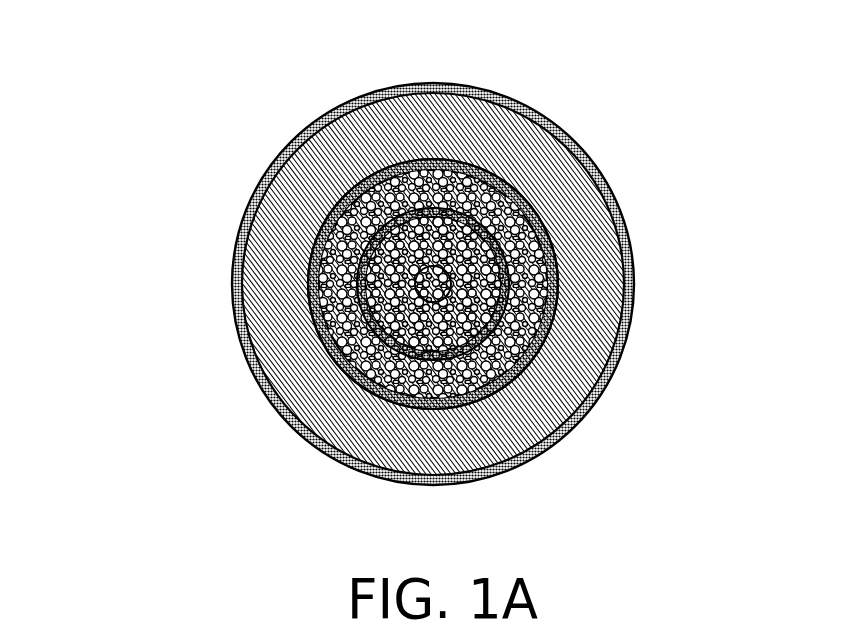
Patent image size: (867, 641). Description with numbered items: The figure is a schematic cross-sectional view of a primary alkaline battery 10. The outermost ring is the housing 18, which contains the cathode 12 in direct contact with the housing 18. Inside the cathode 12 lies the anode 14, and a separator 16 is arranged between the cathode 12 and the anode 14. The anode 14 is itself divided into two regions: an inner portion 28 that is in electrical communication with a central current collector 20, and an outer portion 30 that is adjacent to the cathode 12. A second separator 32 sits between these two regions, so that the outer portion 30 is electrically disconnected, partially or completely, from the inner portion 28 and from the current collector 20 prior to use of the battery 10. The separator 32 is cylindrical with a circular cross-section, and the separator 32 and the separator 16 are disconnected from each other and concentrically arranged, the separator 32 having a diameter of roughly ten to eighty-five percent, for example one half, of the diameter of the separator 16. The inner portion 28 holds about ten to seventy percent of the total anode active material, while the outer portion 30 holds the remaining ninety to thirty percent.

The primary alkaline battery 10 is at (258, 86).
The cathode 12 is at (543, 178).
The anode 14 is at (148, 244).
The separator 16 is at (557, 307).
The housing 18 is at (633, 239).
The current collector 20 is at (430, 268).
The inner portion 28 is at (318, 240).
The outer portion 30 is at (313, 308).
The separator 32 is at (387, 395).